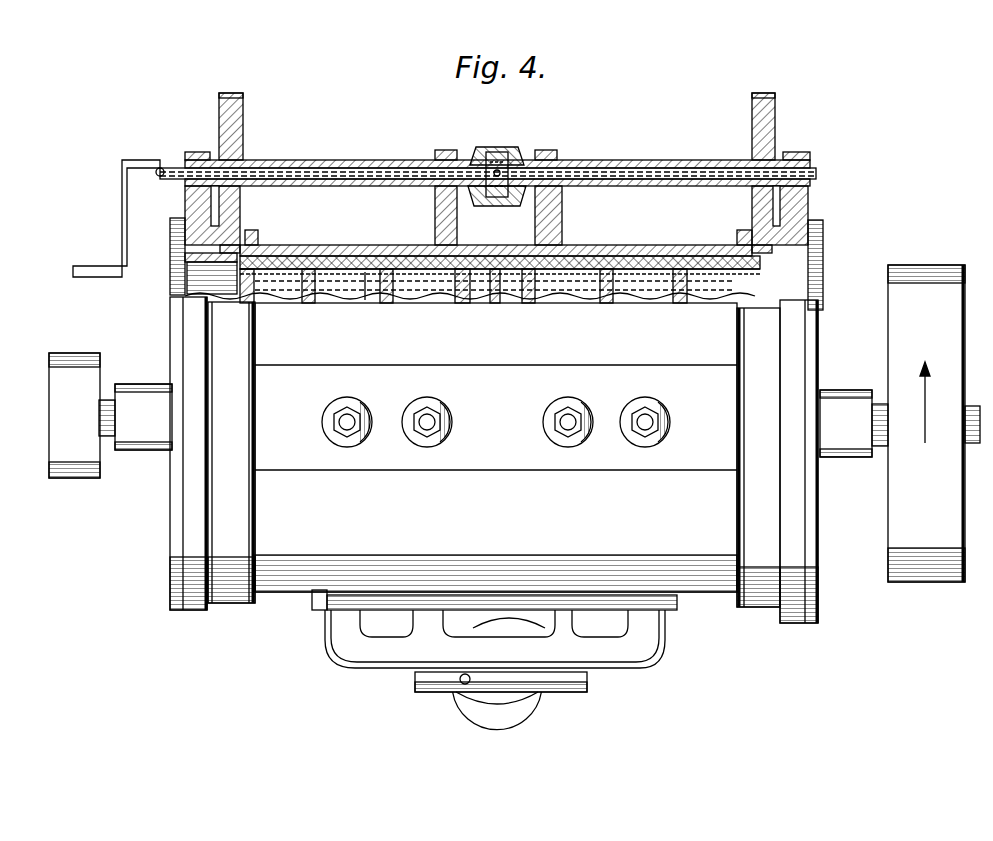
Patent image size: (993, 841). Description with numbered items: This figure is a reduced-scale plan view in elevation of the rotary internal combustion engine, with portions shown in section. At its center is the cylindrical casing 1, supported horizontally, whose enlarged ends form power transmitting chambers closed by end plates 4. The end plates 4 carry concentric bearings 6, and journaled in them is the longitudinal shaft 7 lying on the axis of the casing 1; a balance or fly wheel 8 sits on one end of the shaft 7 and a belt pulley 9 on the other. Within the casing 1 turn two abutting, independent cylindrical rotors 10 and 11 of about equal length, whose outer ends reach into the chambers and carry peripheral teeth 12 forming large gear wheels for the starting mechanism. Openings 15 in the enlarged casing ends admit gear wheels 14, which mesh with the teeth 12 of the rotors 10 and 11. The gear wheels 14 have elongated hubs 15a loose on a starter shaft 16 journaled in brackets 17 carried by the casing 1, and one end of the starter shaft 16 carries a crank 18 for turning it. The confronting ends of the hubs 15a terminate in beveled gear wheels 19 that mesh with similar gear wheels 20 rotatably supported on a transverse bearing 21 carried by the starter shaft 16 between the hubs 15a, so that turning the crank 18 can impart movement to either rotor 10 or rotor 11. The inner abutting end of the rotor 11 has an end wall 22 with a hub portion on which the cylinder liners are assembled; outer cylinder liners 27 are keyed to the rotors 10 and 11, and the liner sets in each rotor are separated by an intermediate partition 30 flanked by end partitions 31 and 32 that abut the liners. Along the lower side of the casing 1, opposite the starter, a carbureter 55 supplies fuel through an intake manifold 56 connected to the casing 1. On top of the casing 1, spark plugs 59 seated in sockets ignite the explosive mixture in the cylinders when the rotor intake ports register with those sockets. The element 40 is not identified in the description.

The cylindrical casing 1 is at (700, 258).
The end plates 4 is at (170, 518).
The concentric bearings 6 is at (147, 442).
The longitudinal shaft 7 is at (112, 398).
The balance or fly wheel 8 is at (926, 423).
The belt pulley 9 is at (60, 378).
The cylindrical rotor 10 is at (286, 245).
The cylindrical rotor 11 is at (647, 255).
The peripheral teeth 12 is at (212, 254).
The gear wheels 14 is at (243, 118).
The openings 15 is at (256, 238).
The elongated hubs 15a is at (350, 152).
The starter shaft 16 is at (636, 170).
The brackets 17 is at (186, 200).
The crank 18 is at (120, 228).
The beveled gear wheels 19 is at (536, 148).
The beveled gear wheels 20 is at (508, 145).
The transverse bearing 21 is at (562, 196).
The end wall 22 is at (494, 300).
The outer cylinder liners 27 is at (322, 268).
The intermediate partition 30 is at (364, 268).
The end partitions 31 is at (680, 300).
The end partitions 32 is at (458, 300).
The flange 40 is at (242, 306).
The carbureter 55 is at (503, 720).
The intake manifold 56 is at (386, 662).
The spark plugs 59 is at (415, 410).